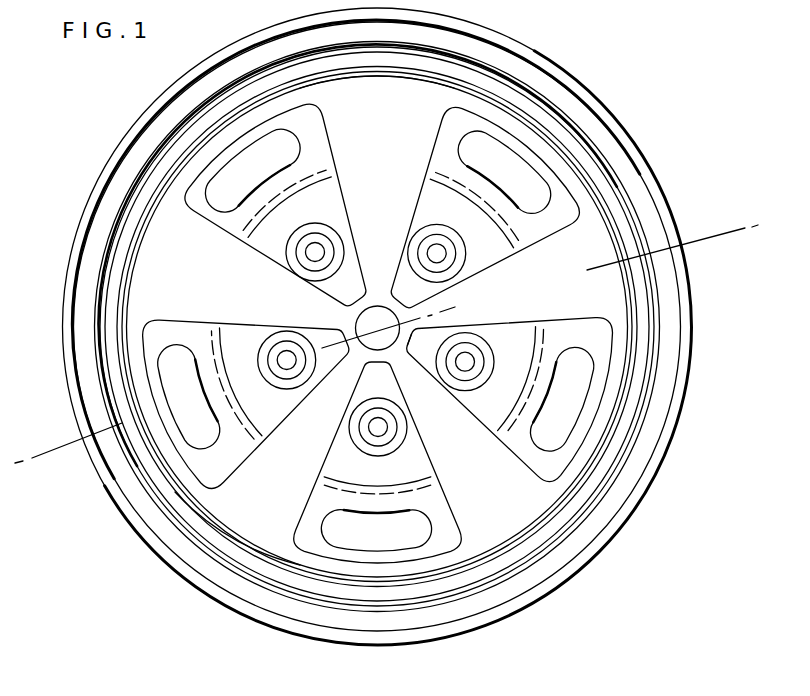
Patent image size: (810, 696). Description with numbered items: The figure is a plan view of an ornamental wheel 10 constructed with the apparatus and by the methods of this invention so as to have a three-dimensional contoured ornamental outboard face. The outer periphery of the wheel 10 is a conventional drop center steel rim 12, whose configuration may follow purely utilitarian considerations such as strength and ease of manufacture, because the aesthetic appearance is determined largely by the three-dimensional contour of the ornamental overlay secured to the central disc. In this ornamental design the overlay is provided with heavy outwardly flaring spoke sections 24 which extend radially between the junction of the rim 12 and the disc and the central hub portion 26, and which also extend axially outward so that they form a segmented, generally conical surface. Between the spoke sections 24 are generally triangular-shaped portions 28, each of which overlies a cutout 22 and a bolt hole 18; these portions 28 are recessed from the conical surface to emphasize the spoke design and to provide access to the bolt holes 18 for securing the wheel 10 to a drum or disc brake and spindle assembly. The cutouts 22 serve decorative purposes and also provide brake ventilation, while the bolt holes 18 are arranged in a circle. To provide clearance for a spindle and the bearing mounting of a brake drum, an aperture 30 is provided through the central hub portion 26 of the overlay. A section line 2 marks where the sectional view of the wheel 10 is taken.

The wheel 10 is at (80, 199).
The drop center steel rim 12 is at (147, 512).
The section line 2- 2 is at (722, 226).
The bolt holes 18 is at (287, 363).
The cutouts 22 is at (563, 425).
The spoke sections 24 is at (412, 120).
The central hub portion 26 is at (397, 352).
The triangular-shaped portions 28 is at (442, 530).
The aperture 30 is at (378, 316).